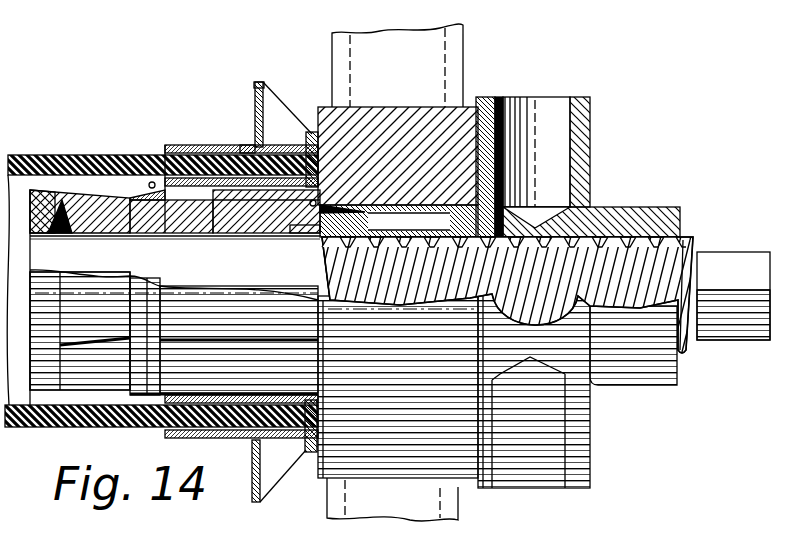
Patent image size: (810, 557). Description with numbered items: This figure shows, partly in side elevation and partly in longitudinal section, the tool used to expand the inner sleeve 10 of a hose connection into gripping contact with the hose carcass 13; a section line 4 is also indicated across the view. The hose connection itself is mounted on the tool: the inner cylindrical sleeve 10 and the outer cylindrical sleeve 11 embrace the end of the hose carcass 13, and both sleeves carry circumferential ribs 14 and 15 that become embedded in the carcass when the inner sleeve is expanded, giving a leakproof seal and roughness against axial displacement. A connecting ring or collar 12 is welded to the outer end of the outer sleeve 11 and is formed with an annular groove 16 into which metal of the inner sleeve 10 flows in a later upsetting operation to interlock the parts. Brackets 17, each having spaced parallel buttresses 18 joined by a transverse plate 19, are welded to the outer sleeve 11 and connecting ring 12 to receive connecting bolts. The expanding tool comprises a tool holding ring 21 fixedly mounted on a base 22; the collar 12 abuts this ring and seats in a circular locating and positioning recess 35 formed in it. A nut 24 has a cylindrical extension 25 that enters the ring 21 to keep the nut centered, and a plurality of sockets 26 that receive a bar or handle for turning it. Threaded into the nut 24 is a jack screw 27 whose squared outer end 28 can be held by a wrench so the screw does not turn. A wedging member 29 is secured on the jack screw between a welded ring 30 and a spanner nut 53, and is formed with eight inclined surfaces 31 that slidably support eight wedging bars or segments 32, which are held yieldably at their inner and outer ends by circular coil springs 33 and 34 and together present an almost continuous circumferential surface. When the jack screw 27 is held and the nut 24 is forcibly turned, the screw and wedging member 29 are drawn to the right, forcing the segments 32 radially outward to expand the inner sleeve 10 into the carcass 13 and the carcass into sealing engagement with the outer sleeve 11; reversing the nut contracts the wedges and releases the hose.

The section line 4- 4 is at (222, 290).
The inner cylindrical sleeve 10 is at (164, 156).
The outer cylindrical sleeve 11 is at (188, 147).
The connecting ring or collar 12 is at (308, 140).
The hose carcass 13 is at (110, 156).
The exterior circumferential ribs 14 is at (218, 238).
The interior circumferential ribs 15 is at (249, 147).
The annular groove 16 is at (298, 240).
The bracket 17 is at (256, 116).
The buttress 18 is at (306, 126).
The transverse plate 19 is at (260, 84).
The tool holding ring 21 is at (458, 115).
The base 22 is at (440, 68).
The nut 24 is at (592, 120).
The cylindrical extension 25 is at (398, 221).
The sockets 26 is at (552, 117).
The jack screw 27 is at (683, 242).
The squared outer end 28 is at (742, 264).
The wedging member 29 is at (116, 428).
The welded ring 30 is at (45, 192).
The inclined surfaces 31 is at (65, 396).
The wedging bars or segments 32 is at (170, 236).
The circular coil spring 33 is at (148, 186).
The circular coil spring 34 is at (399, 221).
The locating and positioning recess 35 is at (340, 109).
The spanner nut 53 is at (323, 250).